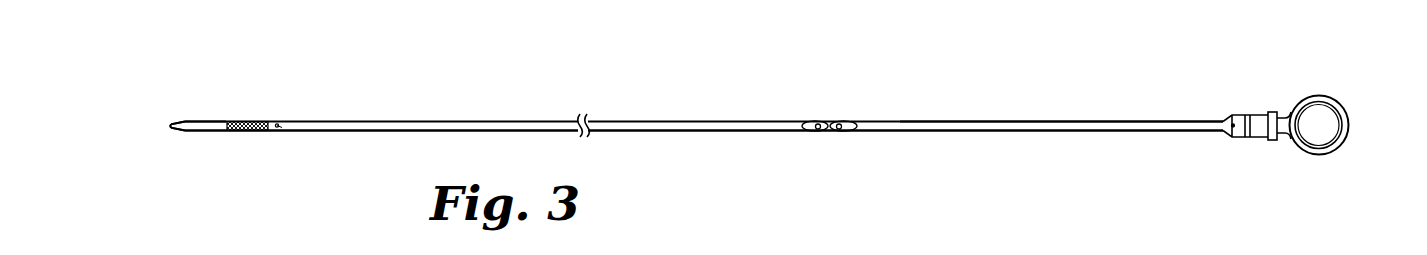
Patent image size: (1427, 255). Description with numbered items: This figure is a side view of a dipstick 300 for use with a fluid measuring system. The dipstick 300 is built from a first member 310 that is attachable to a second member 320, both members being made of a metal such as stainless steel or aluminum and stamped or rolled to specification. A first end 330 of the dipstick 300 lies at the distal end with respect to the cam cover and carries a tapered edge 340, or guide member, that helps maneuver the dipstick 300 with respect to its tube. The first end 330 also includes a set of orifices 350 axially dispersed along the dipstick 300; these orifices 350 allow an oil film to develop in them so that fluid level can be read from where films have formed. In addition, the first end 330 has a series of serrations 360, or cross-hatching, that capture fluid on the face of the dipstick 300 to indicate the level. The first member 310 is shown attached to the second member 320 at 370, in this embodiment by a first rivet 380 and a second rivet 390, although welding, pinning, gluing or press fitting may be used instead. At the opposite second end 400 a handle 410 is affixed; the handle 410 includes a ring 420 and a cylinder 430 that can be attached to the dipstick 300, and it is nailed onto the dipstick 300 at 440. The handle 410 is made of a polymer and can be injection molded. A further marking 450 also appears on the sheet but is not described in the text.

The dipstick 300 is at (755, 114).
The first member 310 is at (420, 121).
The second member 320 is at (1033, 120).
The first end 330 is at (193, 121).
The tapered edge 340 is at (172, 126).
The orifices 350 is at (227, 126).
The serrations 360 is at (252, 121).
The attachment location 370 is at (830, 110).
The first rivet 380 is at (818, 132).
The second rivet 390 is at (840, 132).
The second end 400 is at (1290, 118).
The handle 410 is at (1348, 115).
The ring 420 is at (1315, 155).
The cylinder 430 is at (1247, 138).
The nailing location 440 is at (1228, 122).
The sheet reference 450 is at (868, 249).